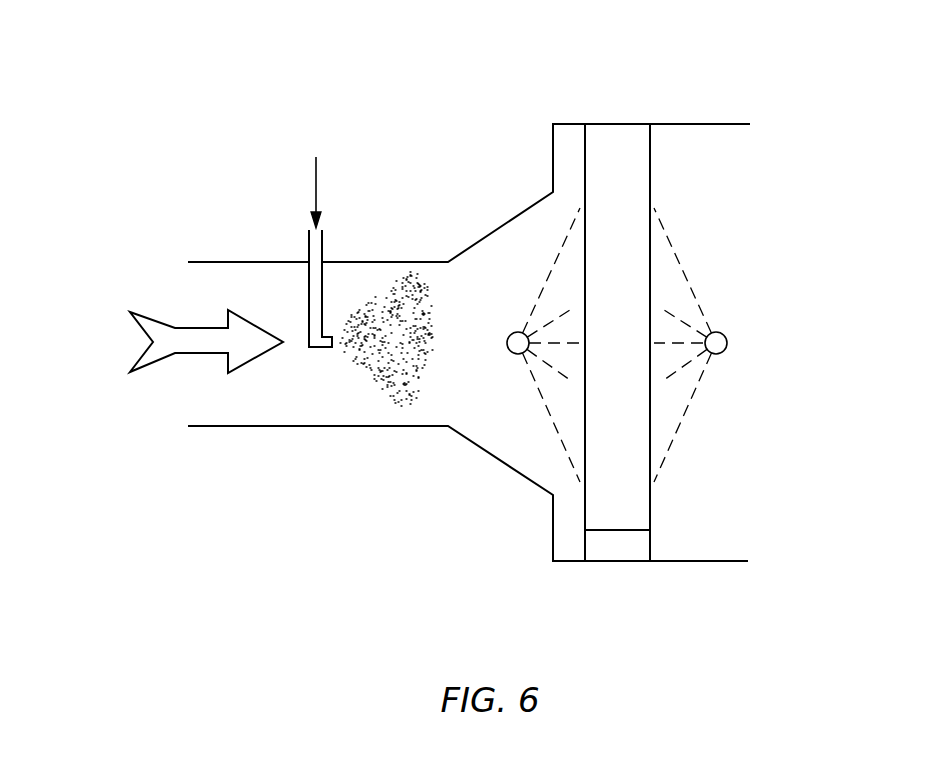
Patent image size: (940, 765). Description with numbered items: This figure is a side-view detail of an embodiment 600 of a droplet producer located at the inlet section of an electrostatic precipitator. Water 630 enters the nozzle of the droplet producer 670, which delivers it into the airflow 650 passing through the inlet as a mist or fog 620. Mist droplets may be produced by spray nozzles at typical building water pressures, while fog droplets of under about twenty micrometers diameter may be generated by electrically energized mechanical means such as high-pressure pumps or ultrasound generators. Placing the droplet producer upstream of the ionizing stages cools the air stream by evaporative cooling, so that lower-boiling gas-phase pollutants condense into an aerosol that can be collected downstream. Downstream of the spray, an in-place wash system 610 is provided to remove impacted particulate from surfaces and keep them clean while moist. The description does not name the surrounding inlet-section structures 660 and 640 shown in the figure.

The fuel injection system 600 is at (795, 90).
The in place wash system 610 is at (518, 354).
The mist or fog 620 is at (380, 373).
The water 630 is at (316, 188).
The inner tube 640 is at (625, 203).
The airflow 650 is at (193, 328).
The pipe wall 660 is at (518, 213).
The droplet producer 670 is at (320, 350).